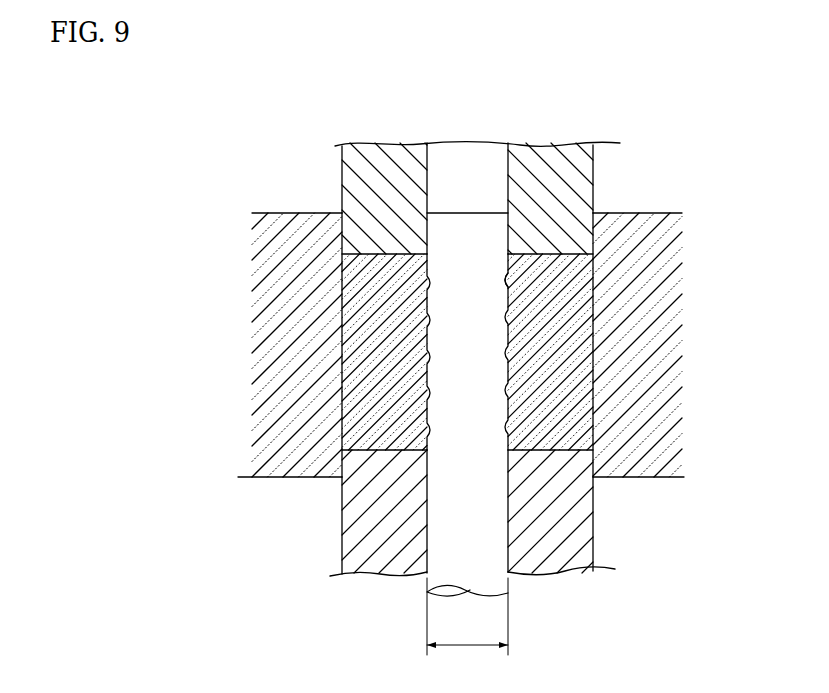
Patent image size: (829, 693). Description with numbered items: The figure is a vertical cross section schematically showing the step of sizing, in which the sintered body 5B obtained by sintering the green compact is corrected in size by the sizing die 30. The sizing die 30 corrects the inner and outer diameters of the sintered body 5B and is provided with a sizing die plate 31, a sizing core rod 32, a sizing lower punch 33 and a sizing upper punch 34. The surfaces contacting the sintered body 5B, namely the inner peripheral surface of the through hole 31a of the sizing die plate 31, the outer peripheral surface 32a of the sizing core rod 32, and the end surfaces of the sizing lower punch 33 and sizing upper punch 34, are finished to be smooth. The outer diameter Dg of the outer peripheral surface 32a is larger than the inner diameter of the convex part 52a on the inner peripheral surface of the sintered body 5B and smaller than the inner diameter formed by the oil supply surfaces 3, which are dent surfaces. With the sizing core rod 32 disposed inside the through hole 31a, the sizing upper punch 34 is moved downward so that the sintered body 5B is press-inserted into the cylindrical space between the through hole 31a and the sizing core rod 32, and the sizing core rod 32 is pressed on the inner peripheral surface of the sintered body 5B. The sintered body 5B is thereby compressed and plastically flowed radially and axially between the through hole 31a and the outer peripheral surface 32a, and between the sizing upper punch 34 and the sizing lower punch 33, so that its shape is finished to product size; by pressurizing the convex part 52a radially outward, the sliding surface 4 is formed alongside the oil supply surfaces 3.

The sizing die 30 is at (610, 125).
The sizing die plate 31 is at (300, 213).
The through hole of the sizing die plate 31a is at (594, 285).
The sizing core rod 32 is at (484, 207).
The outer peripheral surface of the sizing core rod 32a is at (488, 554).
The sizing lower punch 33 is at (368, 560).
The sizing upper punch 34 is at (383, 157).
The convex part 52a is at (502, 264).
The sintered body 5B is at (369, 451).
The oil supply surfaces 3 is at (432, 316).
The sliding surface 4 is at (502, 294).
The outer diameter of the outer peripheral surface of the sizing core rod Dg is at (467, 616).